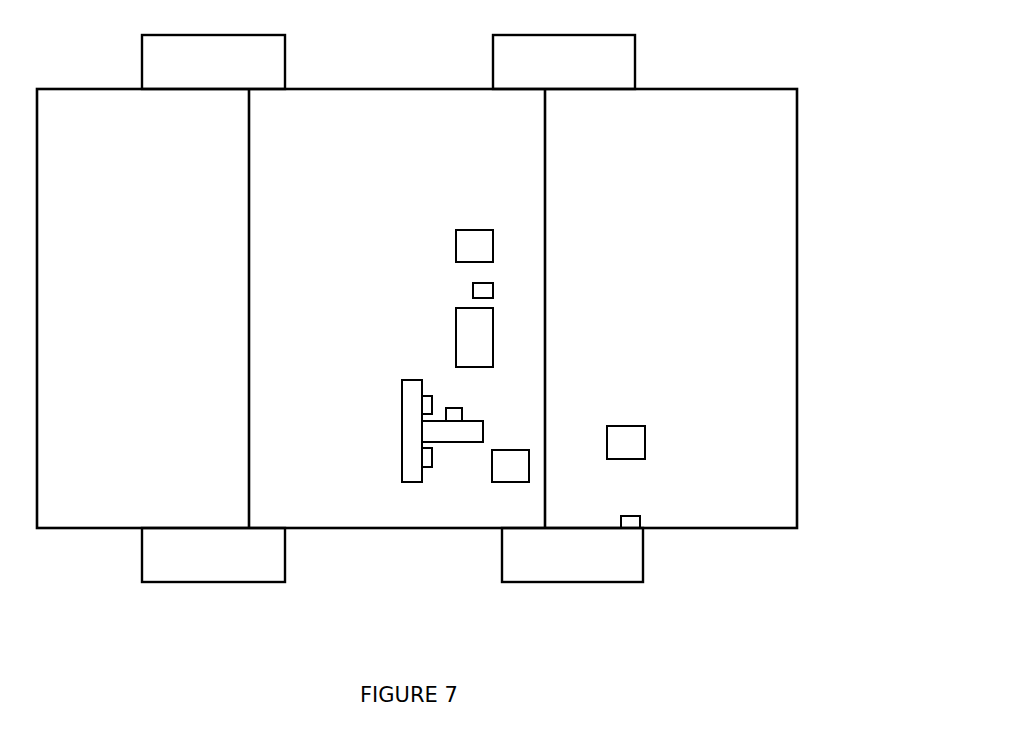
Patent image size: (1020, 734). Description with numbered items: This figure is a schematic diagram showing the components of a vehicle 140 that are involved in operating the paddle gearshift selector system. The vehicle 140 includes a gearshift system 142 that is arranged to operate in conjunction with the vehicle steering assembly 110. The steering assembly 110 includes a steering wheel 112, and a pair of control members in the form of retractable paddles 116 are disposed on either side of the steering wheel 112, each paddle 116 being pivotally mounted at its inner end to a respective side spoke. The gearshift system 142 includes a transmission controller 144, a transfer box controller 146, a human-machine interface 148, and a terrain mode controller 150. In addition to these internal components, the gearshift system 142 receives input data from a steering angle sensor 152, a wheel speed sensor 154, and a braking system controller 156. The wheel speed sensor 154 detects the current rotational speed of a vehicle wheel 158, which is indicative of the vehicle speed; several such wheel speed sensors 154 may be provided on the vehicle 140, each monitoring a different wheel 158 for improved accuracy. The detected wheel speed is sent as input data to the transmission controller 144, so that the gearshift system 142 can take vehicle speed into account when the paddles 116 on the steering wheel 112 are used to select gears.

The vehicle 140 is at (120, 593).
The gearshift system 142 is at (698, 395).
The transmission controller 144 is at (633, 442).
The transfer box controller 146 is at (493, 288).
The human-machine interface 148 is at (478, 343).
The terrain mode controller 150 is at (480, 236).
The steering angle sensor 152 is at (452, 408).
The wheel speed sensor 154 is at (642, 525).
The braking system controller 156 is at (515, 470).
The vehicle wheel 158 is at (528, 552).
The vehicle steering assembly 110 is at (402, 498).
The steering wheel 112 is at (402, 395).
The retractable paddle 116 is at (432, 465).